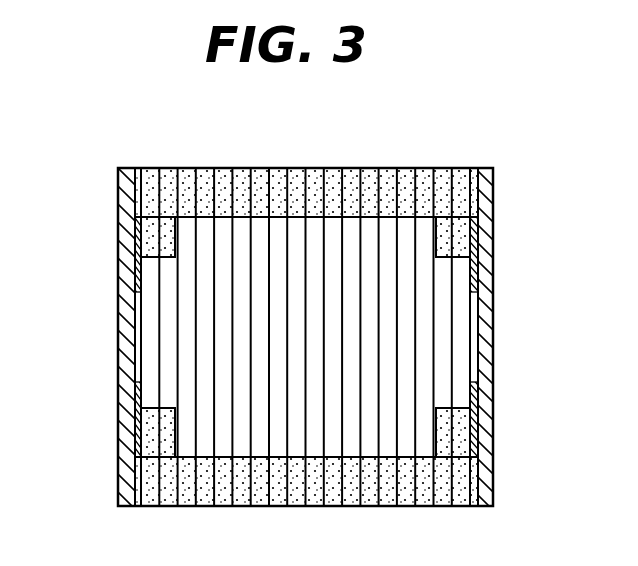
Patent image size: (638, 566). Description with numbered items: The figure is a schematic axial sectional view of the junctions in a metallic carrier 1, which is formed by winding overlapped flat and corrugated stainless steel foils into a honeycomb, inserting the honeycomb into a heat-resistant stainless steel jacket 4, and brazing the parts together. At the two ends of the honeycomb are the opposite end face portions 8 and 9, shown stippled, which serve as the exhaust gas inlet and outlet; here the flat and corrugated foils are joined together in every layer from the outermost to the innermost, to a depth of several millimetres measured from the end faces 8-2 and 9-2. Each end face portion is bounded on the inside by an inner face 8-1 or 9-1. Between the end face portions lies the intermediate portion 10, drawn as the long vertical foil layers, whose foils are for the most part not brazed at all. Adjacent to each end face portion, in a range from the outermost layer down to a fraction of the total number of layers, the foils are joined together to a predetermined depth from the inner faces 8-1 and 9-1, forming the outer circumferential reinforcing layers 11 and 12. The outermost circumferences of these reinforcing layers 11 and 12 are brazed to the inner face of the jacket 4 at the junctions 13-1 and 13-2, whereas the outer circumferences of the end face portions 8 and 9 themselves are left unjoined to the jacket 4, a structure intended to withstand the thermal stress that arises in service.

The metallic carrier 1 is at (507, 175).
The jacket 4 is at (127, 198).
The end face portion 8 is at (438, 177).
The inner face of end face portion 8-1 is at (270, 220).
The end face 8-2 is at (333, 168).
The end face portion 9 is at (400, 493).
The inner face of end face portion 9-1 is at (278, 457).
The end face 9-2 is at (325, 507).
The intermediate portion 10 is at (238, 290).
The outer circumferential reinforcing layer 11 is at (145, 255).
The outer circumferential reinforcing layer 12 is at (142, 423).
The junction to jacket 13-1 is at (137, 242).
The junction to jacket 13-2 is at (138, 449).